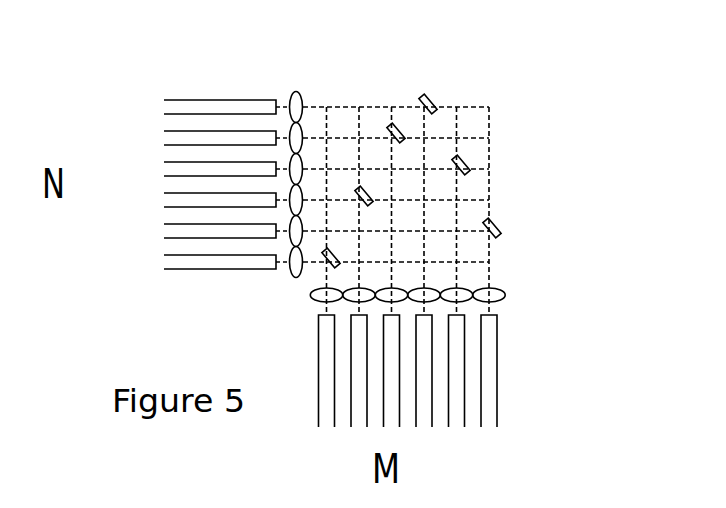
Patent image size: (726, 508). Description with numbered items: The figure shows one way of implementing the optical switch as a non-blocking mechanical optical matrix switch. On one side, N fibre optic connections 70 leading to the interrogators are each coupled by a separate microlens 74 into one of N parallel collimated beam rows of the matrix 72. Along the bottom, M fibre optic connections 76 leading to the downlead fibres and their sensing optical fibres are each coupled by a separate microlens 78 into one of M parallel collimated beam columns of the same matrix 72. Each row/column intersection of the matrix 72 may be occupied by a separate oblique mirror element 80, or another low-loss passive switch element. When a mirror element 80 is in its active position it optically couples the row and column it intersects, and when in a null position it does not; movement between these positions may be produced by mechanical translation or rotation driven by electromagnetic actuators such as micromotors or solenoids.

The fibre optic connections 70 is at (163, 173).
The matrix 72 is at (382, 93).
The microlens 74 is at (297, 84).
The fibre optic connections 76 is at (423, 427).
The microlens 78 is at (520, 296).
The oblique mirror element 80 is at (498, 225).